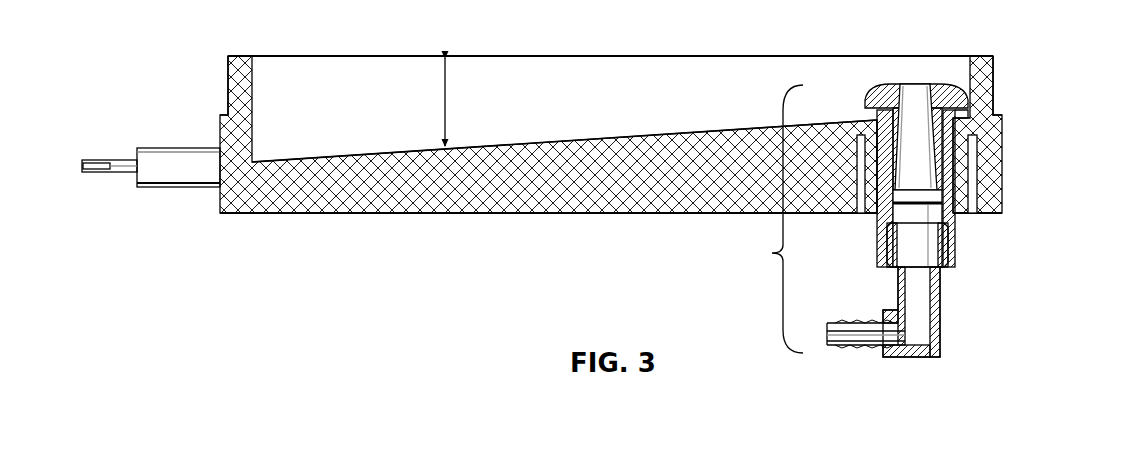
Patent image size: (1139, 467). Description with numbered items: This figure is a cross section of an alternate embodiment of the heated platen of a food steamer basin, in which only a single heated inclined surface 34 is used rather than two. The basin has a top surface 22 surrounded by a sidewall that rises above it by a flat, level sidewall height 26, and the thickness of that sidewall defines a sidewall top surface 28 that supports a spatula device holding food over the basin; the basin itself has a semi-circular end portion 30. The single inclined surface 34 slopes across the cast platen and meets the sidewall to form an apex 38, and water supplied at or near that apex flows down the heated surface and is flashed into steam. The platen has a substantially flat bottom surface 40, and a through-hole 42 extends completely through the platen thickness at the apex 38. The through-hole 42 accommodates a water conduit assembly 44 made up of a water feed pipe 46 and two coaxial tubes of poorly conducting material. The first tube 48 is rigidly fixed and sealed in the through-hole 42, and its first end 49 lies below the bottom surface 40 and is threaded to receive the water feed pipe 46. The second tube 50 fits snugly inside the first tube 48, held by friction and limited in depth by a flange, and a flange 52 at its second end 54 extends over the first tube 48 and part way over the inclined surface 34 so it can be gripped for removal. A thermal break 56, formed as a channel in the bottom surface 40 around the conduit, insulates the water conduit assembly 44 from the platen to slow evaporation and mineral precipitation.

The top surface 22 is at (626, 143).
The sidewall height 26 is at (445, 98).
The sidewall top surface 28 is at (238, 56).
The semi-circular end portion 30 is at (305, 56).
The inclined surface 34 is at (572, 140).
The apex 38 is at (963, 121).
The bottom surface 40 is at (338, 213).
The through-hole 42 is at (870, 128).
The water conduit assembly 44 is at (772, 219).
The water feed pipe 46 is at (848, 345).
The first tube 48 is at (963, 151).
The first end 49 is at (953, 268).
The second tube 50 is at (963, 112).
The flange 52 is at (886, 82).
The second end 54 is at (933, 83).
The thermal break 56 is at (858, 215).